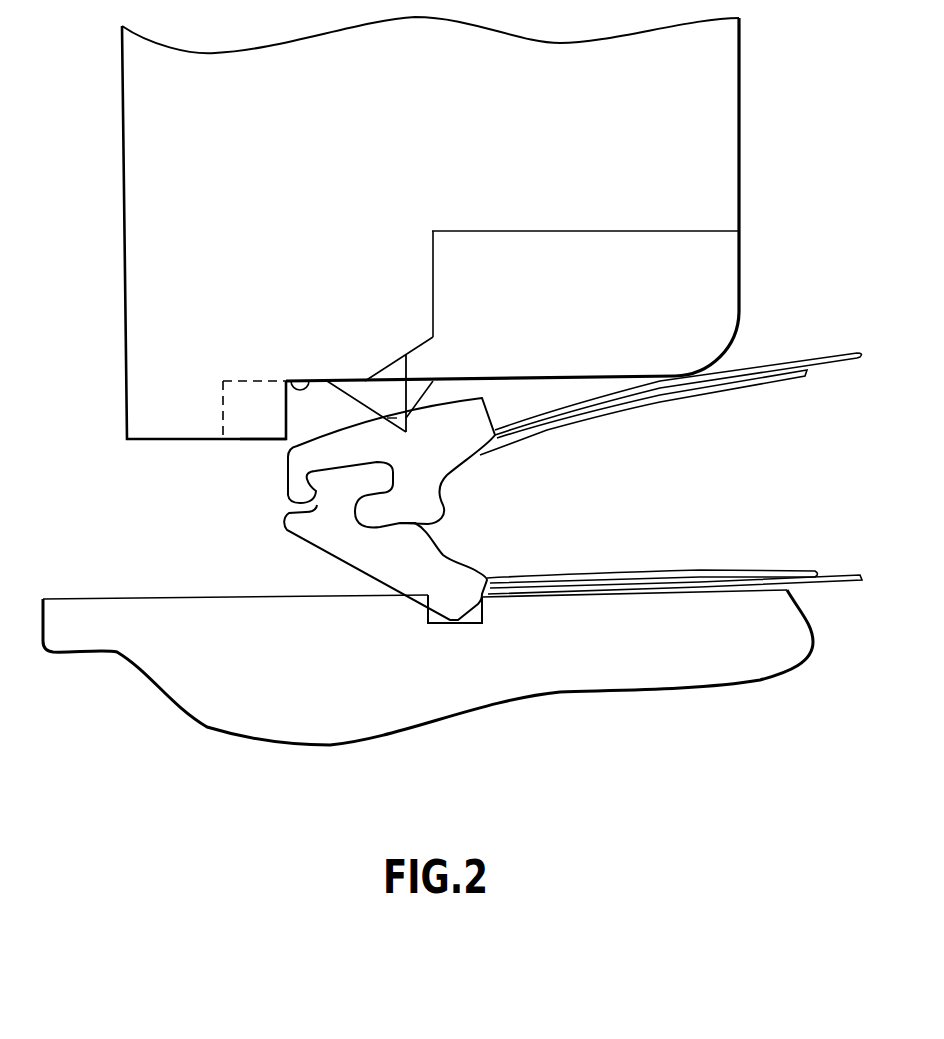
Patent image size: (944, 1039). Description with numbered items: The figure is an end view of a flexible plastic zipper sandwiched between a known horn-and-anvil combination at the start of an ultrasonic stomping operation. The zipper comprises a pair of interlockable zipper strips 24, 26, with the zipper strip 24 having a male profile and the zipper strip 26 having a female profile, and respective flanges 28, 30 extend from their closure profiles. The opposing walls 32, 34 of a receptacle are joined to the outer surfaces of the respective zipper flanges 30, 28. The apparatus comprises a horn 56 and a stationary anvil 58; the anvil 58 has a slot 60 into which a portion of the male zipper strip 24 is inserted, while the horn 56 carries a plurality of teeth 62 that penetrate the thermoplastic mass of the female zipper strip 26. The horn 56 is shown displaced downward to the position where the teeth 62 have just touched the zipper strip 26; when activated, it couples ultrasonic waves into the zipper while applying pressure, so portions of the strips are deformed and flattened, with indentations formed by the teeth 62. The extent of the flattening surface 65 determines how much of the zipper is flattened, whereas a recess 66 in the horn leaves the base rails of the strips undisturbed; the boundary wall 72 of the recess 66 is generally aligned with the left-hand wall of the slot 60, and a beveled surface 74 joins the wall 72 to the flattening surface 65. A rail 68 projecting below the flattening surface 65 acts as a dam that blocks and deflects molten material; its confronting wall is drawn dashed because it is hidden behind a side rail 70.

The zipper strip 24 is at (330, 551).
The zipper strip 26 is at (286, 476).
The flange 28 is at (603, 572).
The flange 30 is at (773, 384).
The receptacle wall 32 is at (843, 352).
The receptacle wall 34 is at (847, 582).
The horn 56 is at (740, 125).
The anvil 58 is at (41, 617).
The slot 60 is at (427, 609).
The teeth 62 is at (363, 405).
The flattening surface 65 is at (290, 380).
The recess 66 is at (650, 300).
The rail 68 is at (227, 412).
The side rail 70 is at (250, 439).
The wall 72 is at (433, 289).
The beveled surface 74 is at (423, 346).